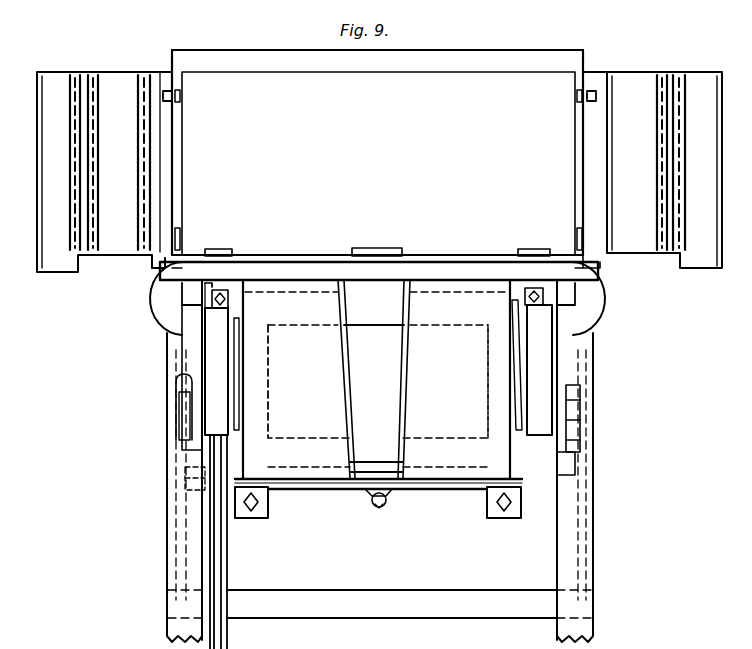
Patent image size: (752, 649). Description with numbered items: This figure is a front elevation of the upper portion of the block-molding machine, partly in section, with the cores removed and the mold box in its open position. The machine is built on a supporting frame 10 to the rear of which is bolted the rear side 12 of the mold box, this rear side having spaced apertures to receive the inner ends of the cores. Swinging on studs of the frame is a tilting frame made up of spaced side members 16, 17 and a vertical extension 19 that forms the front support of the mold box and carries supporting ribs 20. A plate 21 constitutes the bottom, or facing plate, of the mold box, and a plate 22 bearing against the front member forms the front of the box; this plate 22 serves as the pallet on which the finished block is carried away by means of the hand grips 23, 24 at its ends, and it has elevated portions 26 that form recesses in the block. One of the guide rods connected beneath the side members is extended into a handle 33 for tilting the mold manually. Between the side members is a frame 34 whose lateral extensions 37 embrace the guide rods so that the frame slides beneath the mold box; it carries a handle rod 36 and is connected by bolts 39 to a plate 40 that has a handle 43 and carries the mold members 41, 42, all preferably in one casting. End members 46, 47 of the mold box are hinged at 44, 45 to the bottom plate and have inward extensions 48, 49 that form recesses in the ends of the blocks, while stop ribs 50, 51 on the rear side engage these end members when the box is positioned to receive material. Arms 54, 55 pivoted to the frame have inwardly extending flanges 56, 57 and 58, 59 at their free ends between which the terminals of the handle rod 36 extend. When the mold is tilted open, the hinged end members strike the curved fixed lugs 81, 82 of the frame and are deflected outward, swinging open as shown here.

The supporting frame 10 is at (597, 535).
The rear side of the mold box 12 is at (532, 52).
The side member 16 is at (216, 359).
The side member 17 is at (539, 370).
The vertical extension 19 is at (455, 283).
The supporting ribs 20 is at (200, 295).
The bottom plate 21 is at (377, 152).
The front plate 22 is at (290, 262).
The hand grip 23 is at (166, 257).
The hand grip 24 is at (588, 258).
The elevated portions 26 is at (226, 249).
The handle 33 is at (228, 572).
The frame 34 is at (379, 326).
The handle rod 36 is at (412, 494).
The lateral extensions 37 is at (240, 298).
The bolts 39 is at (269, 509).
The plate 40 is at (331, 490).
The mold member 41 is at (285, 381).
The mold member 42 is at (462, 381).
The handle 43 is at (374, 517).
The hinge 44 is at (181, 97).
The hinge 45 is at (576, 98).
The end member 46 is at (65, 74).
The end member 47 is at (690, 74).
The inward extension 48 is at (125, 82).
The inward extension 49 is at (640, 75).
The stop rib 50 is at (171, 60).
The stop rib 51 is at (585, 60).
The arm 54 is at (184, 440).
The arm 55 is at (578, 442).
The flange 56 is at (182, 380).
The flange 57 is at (180, 420).
The flange 58 is at (570, 386).
The flange 59 is at (574, 418).
The lug 81 is at (160, 290).
The lug 82 is at (600, 290).